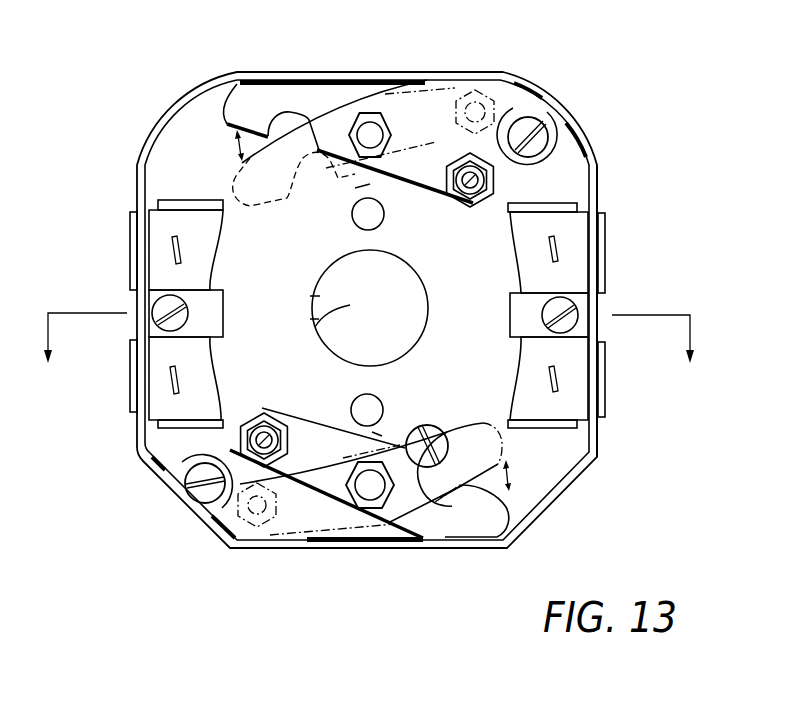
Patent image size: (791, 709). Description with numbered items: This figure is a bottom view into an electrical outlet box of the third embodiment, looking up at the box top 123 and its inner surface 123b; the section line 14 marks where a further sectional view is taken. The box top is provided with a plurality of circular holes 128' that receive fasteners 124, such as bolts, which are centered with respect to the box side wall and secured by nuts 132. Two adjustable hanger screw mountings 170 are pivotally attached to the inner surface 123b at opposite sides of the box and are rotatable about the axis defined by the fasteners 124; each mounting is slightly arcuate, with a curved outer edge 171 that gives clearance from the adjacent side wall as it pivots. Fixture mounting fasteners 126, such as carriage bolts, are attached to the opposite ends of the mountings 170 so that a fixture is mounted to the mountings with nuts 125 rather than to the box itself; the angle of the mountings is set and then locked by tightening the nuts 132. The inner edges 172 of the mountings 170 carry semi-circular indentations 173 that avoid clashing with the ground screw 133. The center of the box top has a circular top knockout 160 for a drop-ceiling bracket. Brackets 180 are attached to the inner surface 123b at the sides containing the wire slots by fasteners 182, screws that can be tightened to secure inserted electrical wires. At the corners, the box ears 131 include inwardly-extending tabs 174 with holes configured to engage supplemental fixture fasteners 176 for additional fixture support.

The section line 14- 14 is at (370, 354).
The box top 123 is at (600, 100).
The inner surface of box top 123b is at (577, 178).
The fasteners 124 is at (368, 130).
The nuts 125 is at (486, 205).
The fixture mounting fasteners 126 is at (455, 201).
The circular holes 128' is at (335, 312).
The box ears 131 is at (191, 510).
The nuts 132 is at (393, 137).
The ground screw 133 is at (433, 437).
The circular top knockout 160 is at (315, 327).
The adjustable hanger screw mountings 170 is at (230, 103).
The curved outer edge 171 is at (236, 73).
The inner edges 172 is at (360, 187).
The semi-circular indentations 173 is at (293, 110).
The inwardly-extending tabs 174 is at (182, 466).
The supplemental fixture fasteners 176 is at (195, 494).
The brackets 180 is at (158, 243).
The fasteners 182 is at (153, 307).